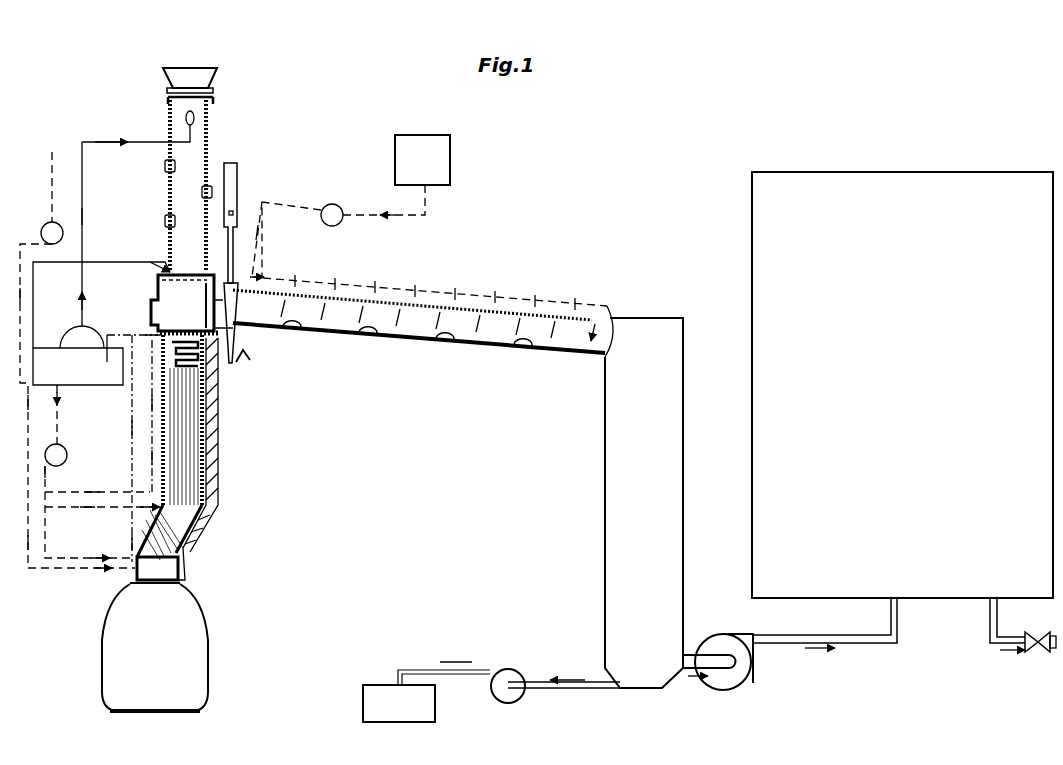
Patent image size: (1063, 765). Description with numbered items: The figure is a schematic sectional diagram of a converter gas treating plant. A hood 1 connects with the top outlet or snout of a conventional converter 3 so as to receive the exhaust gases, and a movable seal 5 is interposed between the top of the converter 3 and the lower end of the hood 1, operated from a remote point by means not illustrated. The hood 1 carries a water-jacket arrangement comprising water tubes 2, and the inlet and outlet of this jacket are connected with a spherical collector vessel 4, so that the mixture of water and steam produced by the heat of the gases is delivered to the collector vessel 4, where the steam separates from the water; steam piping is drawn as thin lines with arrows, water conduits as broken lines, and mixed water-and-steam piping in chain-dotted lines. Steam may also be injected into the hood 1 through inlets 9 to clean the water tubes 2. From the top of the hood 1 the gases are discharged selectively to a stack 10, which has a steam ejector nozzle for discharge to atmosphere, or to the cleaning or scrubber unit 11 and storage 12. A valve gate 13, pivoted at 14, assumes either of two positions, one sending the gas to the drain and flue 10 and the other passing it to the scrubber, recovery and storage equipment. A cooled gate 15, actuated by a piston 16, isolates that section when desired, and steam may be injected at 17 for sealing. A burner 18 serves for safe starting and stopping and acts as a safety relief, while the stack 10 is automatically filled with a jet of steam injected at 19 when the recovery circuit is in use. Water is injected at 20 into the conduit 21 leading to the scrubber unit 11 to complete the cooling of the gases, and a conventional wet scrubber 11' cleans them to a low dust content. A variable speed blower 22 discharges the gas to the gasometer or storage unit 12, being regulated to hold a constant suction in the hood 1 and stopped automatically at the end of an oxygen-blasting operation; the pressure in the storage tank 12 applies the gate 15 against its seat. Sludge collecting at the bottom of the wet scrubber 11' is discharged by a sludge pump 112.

The hood 1 is at (165, 436).
The water tubes 2 is at (172, 344).
The converter 3 is at (108, 653).
The spherical collector vessel 4 is at (76, 344).
The movable seal 5 is at (181, 582).
The inlets 9 is at (208, 470).
The stack 10 is at (182, 175).
The cleaning or scrubber unit 11 is at (419, 358).
The wet scrubber 11' is at (613, 503).
The sludge pump 112 is at (538, 648).
The gasometer or storage unit 12 is at (760, 236).
The valve gate 13 is at (182, 304).
The pivot 14 is at (215, 283).
The gate 15 is at (237, 300).
The piston 16 is at (236, 213).
The steam injection point 17 is at (222, 280).
The burner 18 is at (178, 72).
The steam injection point 19 is at (163, 268).
The water injection point 20 is at (480, 293).
The conduit 21 is at (548, 313).
The variable speed blower 22 is at (742, 672).